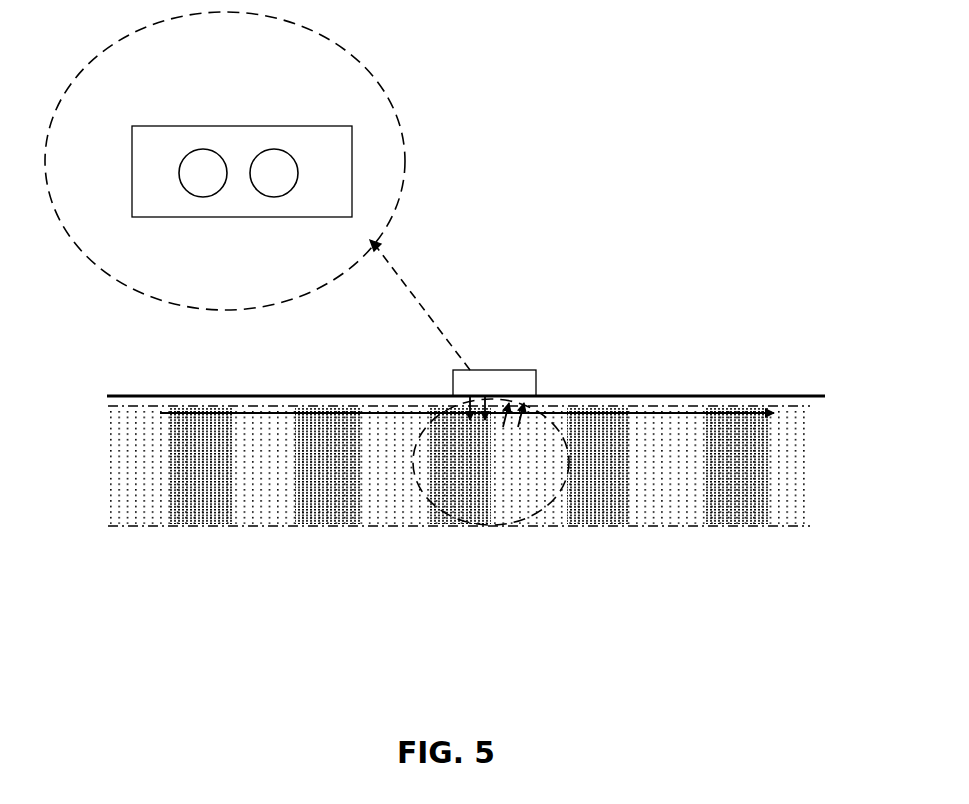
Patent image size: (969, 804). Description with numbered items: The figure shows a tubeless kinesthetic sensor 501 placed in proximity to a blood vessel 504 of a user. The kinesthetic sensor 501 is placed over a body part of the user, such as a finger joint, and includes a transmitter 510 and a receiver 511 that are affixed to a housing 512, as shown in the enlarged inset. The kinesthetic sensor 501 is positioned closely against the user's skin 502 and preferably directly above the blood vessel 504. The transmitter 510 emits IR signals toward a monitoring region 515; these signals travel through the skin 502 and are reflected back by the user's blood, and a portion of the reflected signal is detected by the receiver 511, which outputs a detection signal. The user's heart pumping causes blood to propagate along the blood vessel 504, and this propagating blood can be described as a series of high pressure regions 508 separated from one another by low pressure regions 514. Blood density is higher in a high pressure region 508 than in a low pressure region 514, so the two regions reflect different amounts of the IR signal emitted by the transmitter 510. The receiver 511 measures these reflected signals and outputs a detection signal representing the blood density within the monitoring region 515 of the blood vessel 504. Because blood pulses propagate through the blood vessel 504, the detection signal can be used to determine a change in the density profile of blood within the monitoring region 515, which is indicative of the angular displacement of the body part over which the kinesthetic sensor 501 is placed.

The kinesthetic sensor 501 is at (62, 180).
The skin 502 is at (202, 330).
The blood vessel 504 is at (805, 407).
The high pressure region 508 is at (475, 530).
The transmitter 510 is at (203, 197).
The receiver 511 is at (270, 150).
The housing 512 is at (232, 100).
The low pressure region 514 is at (657, 492).
The monitoring region 515 is at (428, 493).